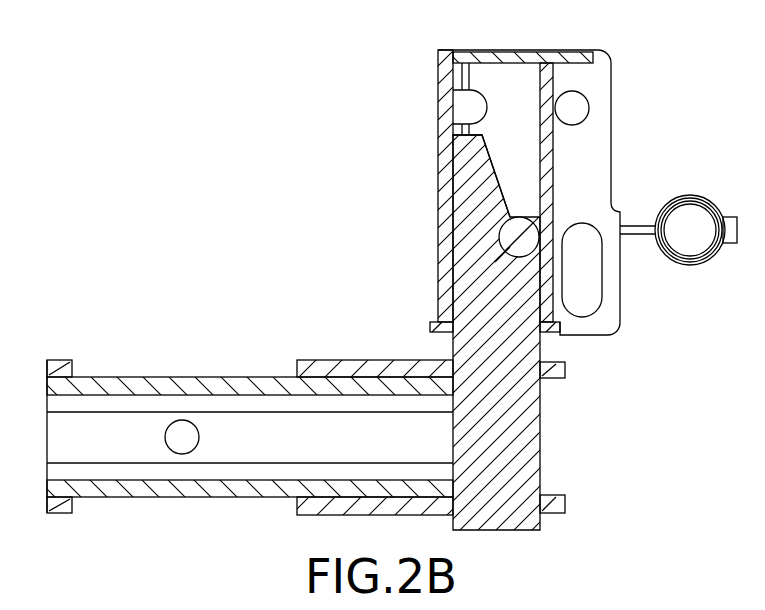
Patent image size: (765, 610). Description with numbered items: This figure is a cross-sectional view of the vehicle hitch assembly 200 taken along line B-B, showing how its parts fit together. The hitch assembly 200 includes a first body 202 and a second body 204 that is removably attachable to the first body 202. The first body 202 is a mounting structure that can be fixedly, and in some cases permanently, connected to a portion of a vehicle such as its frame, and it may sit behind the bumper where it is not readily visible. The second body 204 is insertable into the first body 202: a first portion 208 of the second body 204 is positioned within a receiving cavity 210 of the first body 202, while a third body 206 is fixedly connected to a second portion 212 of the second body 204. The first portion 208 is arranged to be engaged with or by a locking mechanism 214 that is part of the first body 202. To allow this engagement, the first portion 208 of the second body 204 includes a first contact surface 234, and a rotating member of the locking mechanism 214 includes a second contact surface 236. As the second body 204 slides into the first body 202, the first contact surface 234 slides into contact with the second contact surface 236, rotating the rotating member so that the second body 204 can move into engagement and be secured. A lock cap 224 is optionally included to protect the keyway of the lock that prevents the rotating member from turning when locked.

The vehicle hitch assembly 200 is at (122, 177).
The first body 202 is at (445, 200).
The second body 204 is at (520, 440).
The third body 206 is at (194, 385).
The first portion 208 is at (470, 163).
The receiving cavity 210 is at (505, 100).
The second portion 212 is at (520, 398).
The locking mechanism 214 is at (545, 226).
The lock cap 224 is at (702, 205).
The first contact surface 234 is at (553, 145).
The second contact surface 236 is at (490, 260).